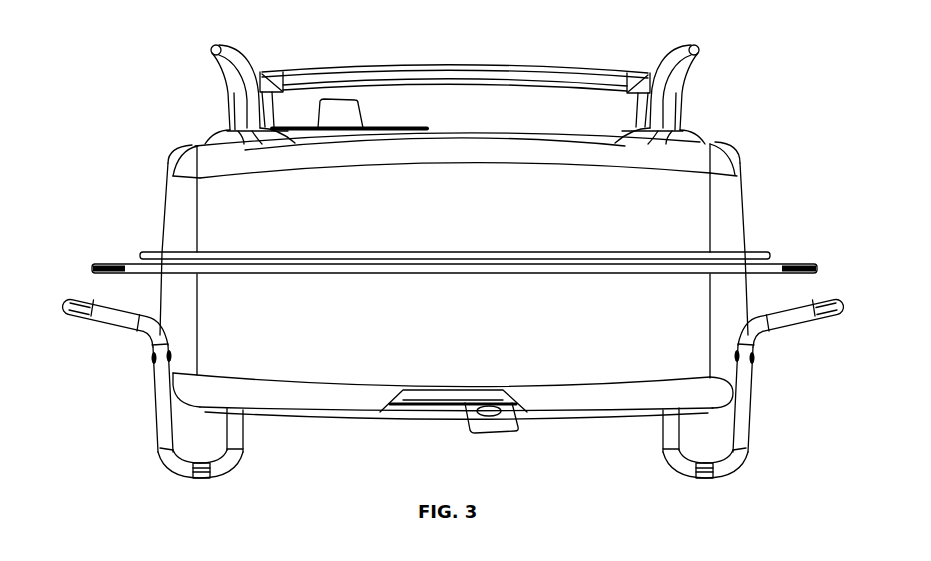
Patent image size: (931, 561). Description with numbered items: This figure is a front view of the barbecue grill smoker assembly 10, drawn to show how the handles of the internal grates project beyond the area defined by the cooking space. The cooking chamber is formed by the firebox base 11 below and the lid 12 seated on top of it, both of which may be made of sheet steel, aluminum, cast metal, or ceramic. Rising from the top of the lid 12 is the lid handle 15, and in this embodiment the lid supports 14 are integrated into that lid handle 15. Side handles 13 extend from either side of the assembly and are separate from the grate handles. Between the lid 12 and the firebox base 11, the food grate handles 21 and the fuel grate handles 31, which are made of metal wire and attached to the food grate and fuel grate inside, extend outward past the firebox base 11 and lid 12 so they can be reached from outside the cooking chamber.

The barbecue grill smoker assembly 10 is at (177, 48).
The firebox base 11 is at (336, 420).
The lid 12 is at (738, 152).
The side handle 13 is at (843, 296).
The lid support 14 is at (699, 50).
The lid handle 15 is at (556, 68).
The food grate handles 21 is at (92, 261).
The fuel grate handles 31 is at (92, 271).